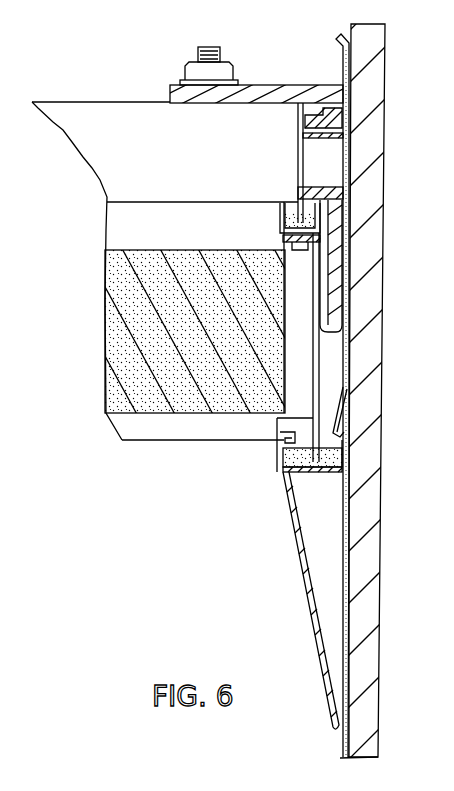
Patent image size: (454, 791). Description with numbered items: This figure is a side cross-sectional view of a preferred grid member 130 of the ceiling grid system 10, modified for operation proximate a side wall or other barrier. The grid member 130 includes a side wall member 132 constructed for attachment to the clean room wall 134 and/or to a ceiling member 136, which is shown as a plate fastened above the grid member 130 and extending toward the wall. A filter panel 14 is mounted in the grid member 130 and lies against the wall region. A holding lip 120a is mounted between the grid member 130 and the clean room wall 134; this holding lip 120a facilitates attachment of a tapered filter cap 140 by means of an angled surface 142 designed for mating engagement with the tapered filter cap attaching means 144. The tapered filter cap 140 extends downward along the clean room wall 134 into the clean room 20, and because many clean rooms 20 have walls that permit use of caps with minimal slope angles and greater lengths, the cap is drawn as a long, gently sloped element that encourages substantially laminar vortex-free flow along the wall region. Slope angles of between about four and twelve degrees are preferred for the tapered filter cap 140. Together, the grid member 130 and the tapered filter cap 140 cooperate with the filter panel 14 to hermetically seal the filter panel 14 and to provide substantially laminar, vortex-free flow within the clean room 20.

The ceiling grid system 10 is at (104, 85).
The filter panel 14 is at (192, 241).
The clean room 20 is at (179, 611).
The holding lip 120a is at (305, 362).
The grid member 130 is at (298, 137).
The side wall member 132 is at (335, 63).
The clean room wall 134 is at (372, 82).
The ceiling member 136 is at (288, 85).
The tapered filter cap 140 is at (298, 556).
The angled surface 142 is at (348, 452).
The tapered filter cap attaching means 144 is at (345, 428).